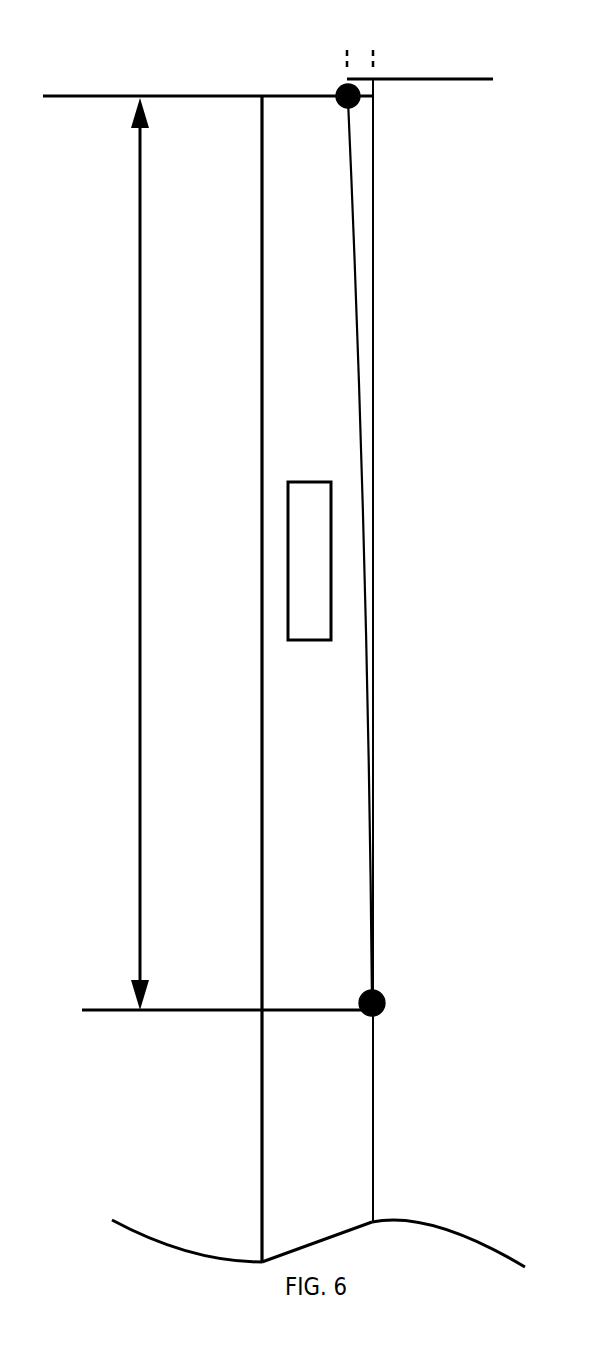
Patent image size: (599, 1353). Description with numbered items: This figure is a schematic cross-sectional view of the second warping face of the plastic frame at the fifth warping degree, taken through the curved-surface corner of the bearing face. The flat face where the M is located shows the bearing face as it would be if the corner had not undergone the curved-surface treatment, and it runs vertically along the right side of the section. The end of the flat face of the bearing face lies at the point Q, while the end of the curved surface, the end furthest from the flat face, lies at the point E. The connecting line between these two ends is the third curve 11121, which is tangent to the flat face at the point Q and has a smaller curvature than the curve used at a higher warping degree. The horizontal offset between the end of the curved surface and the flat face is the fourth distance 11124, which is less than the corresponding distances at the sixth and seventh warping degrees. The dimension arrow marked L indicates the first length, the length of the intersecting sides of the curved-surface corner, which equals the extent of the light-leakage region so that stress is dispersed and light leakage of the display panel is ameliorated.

The fourth distance 11124 is at (422, 80).
The third curve 11121 is at (360, 312).
The flat face M is at (373, 412).
The point E is at (340, 88).
The point Q is at (382, 1010).
The first length L is at (109, 554).